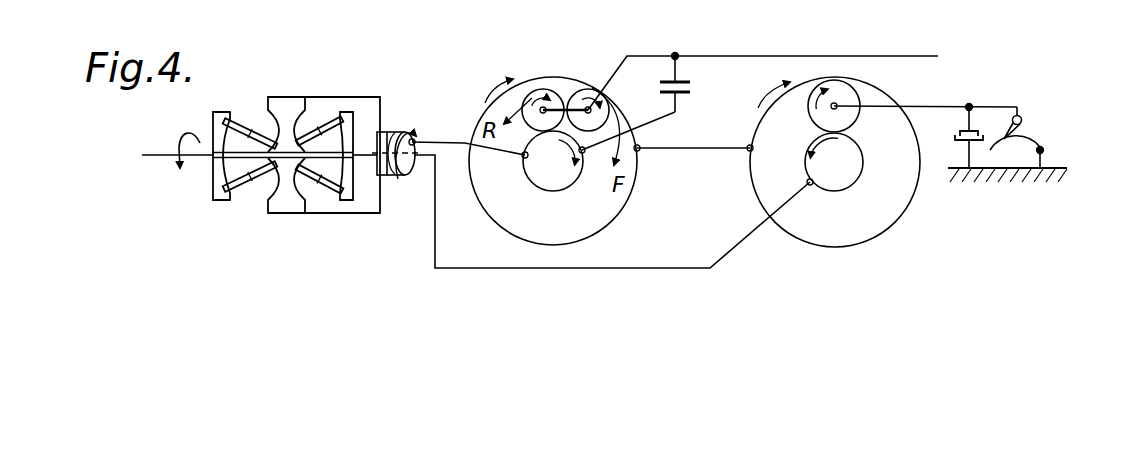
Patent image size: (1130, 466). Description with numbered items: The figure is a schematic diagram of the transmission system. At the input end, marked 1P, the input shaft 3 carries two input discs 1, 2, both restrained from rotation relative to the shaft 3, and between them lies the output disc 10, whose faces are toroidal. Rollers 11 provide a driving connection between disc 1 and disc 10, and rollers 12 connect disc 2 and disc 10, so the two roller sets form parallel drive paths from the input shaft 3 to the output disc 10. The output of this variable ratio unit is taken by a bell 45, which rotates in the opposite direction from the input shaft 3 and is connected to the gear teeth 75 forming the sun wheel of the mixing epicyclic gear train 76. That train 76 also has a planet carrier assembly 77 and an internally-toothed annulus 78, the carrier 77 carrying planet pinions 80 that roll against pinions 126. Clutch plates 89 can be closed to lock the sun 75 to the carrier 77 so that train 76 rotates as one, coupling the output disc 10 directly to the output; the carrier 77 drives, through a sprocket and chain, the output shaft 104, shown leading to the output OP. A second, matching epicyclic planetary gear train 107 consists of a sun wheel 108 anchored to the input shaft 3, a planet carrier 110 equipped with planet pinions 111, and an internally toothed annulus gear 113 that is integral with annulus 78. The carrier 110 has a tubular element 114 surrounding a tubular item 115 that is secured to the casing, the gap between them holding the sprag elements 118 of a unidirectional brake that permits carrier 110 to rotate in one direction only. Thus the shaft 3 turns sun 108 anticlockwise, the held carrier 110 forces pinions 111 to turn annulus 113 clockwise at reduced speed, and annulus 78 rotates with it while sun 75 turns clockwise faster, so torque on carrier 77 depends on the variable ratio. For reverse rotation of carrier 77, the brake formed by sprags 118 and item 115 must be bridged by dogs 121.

The input disc 1 is at (224, 111).
The rollers 11 is at (242, 124).
The output disc 10 is at (290, 105).
The rollers 12 is at (343, 104).
The input disc 2 is at (360, 101).
The input shaft end 1P is at (162, 149).
The input shaft 3 is at (163, 158).
The bell 45 is at (340, 214).
The gear teeth 75 is at (532, 170).
The epicyclic gear train 76 is at (554, 182).
The internally-toothed annulus 78 is at (588, 232).
The pinion 126 is at (538, 90).
The planet carrier assembly 77 is at (585, 100).
The planet pinions 80 is at (575, 97).
The clutch plates 89 is at (692, 87).
The output shaft 104 is at (848, 56).
The output OP is at (960, 60).
The internally toothed annulus gear 113 is at (893, 222).
The epicyclic planetary gear train 107 is at (833, 184).
The planet carrier 110 is at (834, 106).
The planet pinions 111 is at (845, 97).
The sun wheel 108 is at (806, 178).
The dogs 121 is at (960, 131).
The tubular element 114 is at (1022, 117).
The sprag elements 118 is at (1023, 120).
The tubular item 115 is at (1044, 150).